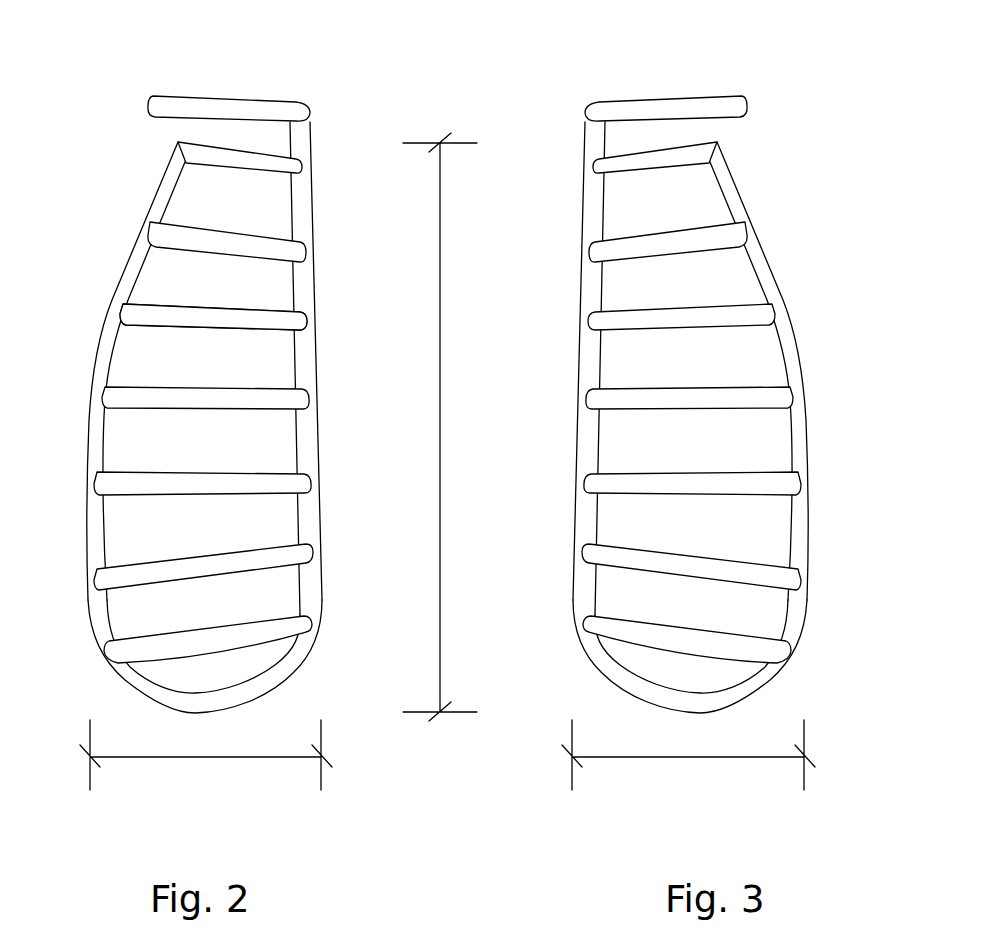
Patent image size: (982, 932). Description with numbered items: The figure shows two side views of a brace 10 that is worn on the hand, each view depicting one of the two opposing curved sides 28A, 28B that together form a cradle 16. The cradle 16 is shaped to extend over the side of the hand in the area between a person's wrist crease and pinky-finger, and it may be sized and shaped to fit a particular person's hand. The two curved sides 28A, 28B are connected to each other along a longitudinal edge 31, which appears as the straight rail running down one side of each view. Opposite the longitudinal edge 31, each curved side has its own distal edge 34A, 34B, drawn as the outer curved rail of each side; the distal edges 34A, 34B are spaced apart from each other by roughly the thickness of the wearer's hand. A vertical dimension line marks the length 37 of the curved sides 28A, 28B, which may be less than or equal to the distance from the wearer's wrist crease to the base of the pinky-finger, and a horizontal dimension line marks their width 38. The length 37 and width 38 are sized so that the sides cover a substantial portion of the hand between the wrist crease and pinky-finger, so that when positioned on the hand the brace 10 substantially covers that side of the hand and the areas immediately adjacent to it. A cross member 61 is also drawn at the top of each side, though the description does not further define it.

In FIG. 2, the brace 10 is at (218, 372).
In FIG. 3, the brace 10 is at (676, 357).
In FIG. 2, the cradle 16 is at (83, 650).
In FIG. 3, the cradle 16 is at (815, 638).
In FIG. 2, the curved side 28A is at (167, 331).
In FIG. 3, the curved side 28B is at (728, 331).
In FIG. 2, the longitudinal edge 31 is at (318, 280).
In FIG. 3, the longitudinal edge 31 is at (567, 368).
In FIG. 2, the distal edge 34A is at (98, 372).
In FIG. 3, the distal edge 34B is at (800, 375).
In FIG. 2, the length 37 is at (440, 257).
In FIG. 2, the width 38 is at (152, 757).
In FIG. 3, the width 38 is at (633, 757).
In FIG. 2, the top cross member 61 is at (215, 95).
In FIG. 3, the top cross member 61 is at (661, 95).